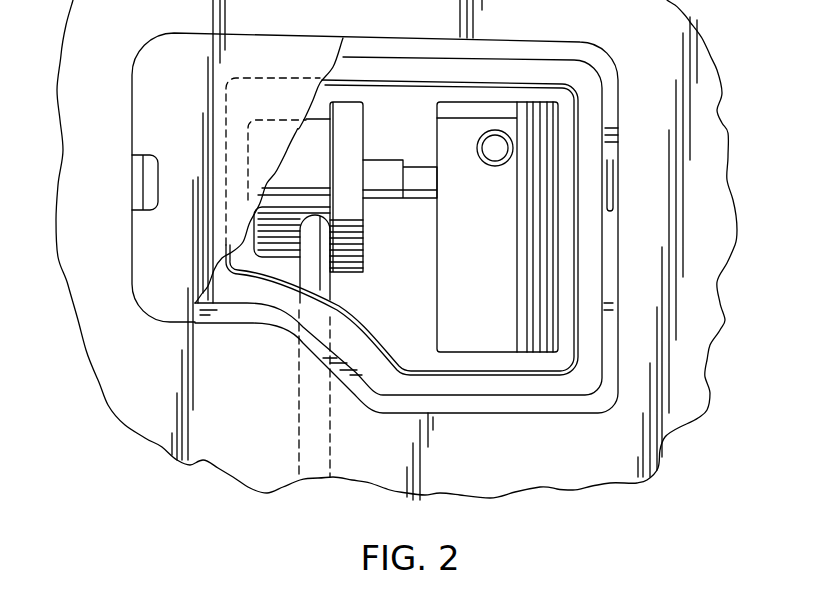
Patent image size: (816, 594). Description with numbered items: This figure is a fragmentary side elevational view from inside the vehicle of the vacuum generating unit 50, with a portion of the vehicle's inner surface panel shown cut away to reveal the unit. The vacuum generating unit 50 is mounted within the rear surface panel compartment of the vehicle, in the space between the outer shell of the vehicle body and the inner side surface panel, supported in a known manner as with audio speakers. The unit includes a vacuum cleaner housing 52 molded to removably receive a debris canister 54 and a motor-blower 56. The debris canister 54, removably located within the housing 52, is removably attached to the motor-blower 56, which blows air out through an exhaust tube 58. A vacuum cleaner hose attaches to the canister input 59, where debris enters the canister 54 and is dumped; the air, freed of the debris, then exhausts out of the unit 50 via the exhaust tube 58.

The vacuum generating unit 50 is at (611, 48).
The vacuum cleaner housing 52 is at (517, 52).
The debris canister 54 is at (481, 297).
The motor-blower 56 is at (316, 171).
The exhaust tube 58 is at (310, 272).
The canister input 59 is at (491, 168).